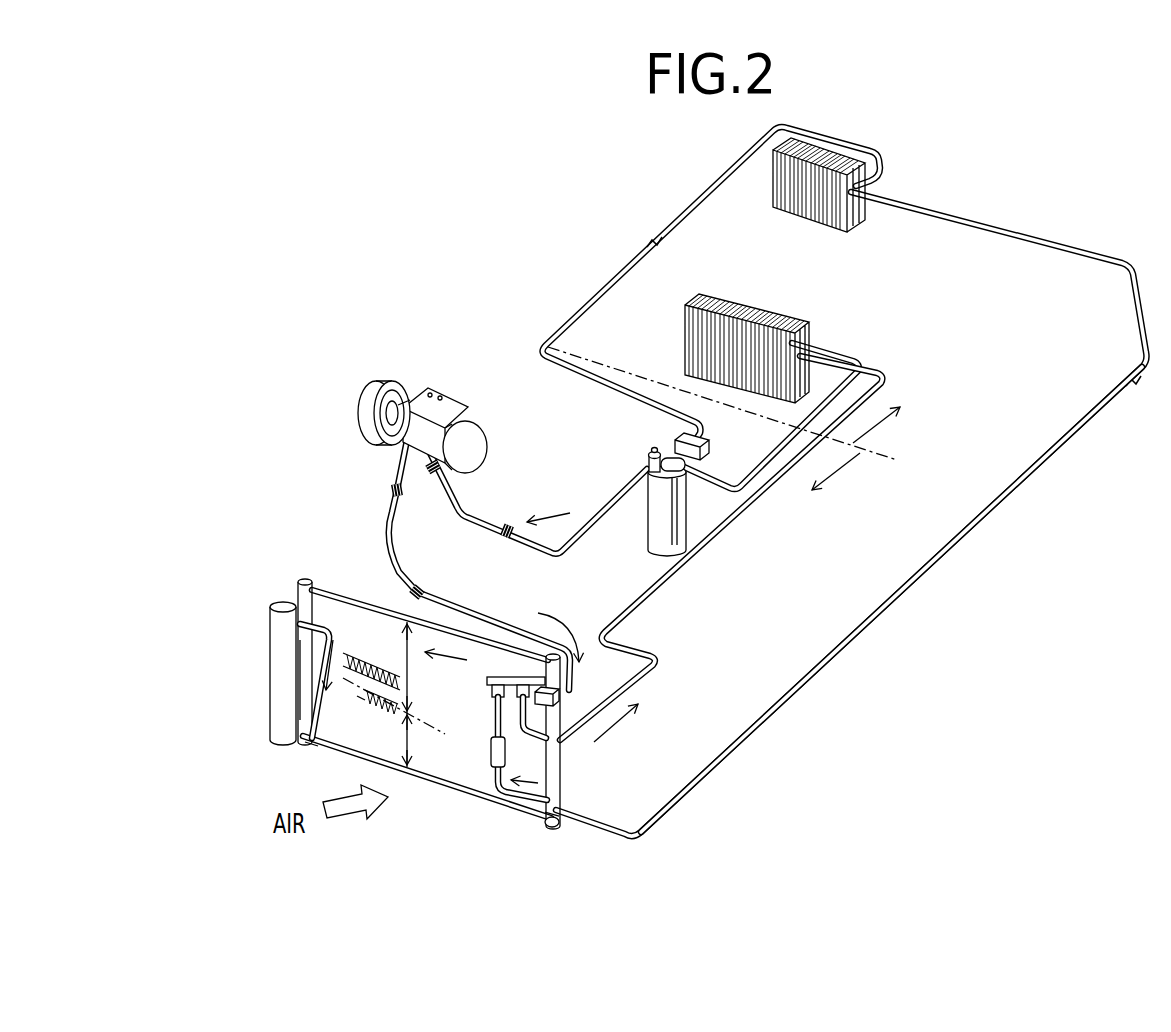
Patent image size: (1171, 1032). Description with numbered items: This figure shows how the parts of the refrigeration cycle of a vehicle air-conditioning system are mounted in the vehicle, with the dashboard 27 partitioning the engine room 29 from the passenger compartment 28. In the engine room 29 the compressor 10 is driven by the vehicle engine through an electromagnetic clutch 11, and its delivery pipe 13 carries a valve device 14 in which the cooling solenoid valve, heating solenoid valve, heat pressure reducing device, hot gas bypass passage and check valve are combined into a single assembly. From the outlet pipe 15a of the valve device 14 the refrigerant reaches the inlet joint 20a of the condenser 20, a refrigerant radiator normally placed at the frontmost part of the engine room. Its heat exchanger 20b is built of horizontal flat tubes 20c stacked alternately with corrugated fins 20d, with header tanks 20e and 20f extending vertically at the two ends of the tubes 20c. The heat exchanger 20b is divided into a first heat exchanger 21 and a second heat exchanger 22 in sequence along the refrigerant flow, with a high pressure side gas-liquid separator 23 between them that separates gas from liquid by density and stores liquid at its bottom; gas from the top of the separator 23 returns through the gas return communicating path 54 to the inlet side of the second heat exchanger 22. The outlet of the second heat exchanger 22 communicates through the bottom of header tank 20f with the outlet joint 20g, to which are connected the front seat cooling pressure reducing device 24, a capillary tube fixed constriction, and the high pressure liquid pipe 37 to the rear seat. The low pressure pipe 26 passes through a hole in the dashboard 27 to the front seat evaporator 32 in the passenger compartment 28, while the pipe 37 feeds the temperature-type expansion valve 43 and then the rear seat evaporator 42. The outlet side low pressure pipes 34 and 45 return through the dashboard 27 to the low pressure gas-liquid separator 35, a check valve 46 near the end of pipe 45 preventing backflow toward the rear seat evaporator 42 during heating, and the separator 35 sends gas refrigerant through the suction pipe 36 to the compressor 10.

The compressor 10 is at (473, 436).
The electromagnetic clutch 11 is at (385, 380).
The delivery pipe 13 is at (388, 497).
The valve device 14 is at (473, 693).
The outlet pipe 15a is at (350, 597).
The condenser 20 is at (327, 573).
The inlet joint 20a is at (303, 597).
The heat exchanger 20b is at (370, 653).
The tubes 20c is at (317, 743).
The corrugated fins 20d is at (357, 698).
The header tank 20e is at (303, 697).
The header tank 20f is at (552, 795).
The outlet joint 20g is at (552, 828).
The first heat exchanger 21 is at (422, 667).
The second heat exchanger 22 is at (422, 740).
The high pressure side gas-liquid separator 23 is at (277, 672).
The front seat cooling pressure reducing device 24 is at (497, 790).
The low pressure pipe 26 is at (698, 551).
The dashboard 27 is at (905, 461).
The passenger compartment 28 is at (959, 393).
The engine room 29 is at (814, 502).
The front seat evaporator 32 is at (758, 305).
The outlet side low pressure pipe 34 is at (777, 441).
The low pressure gas-liquid separator 35 is at (647, 530).
The suction pipe 36 is at (606, 497).
The high pressure liquid pipe 37 is at (893, 600).
The rear seat evaporator 42 is at (815, 148).
The temperature-type expansion valve 43 is at (858, 163).
The outlet side low pressure pipe 45 is at (722, 172).
The check valve 46 is at (670, 437).
The gas return communicating path 54 is at (300, 637).